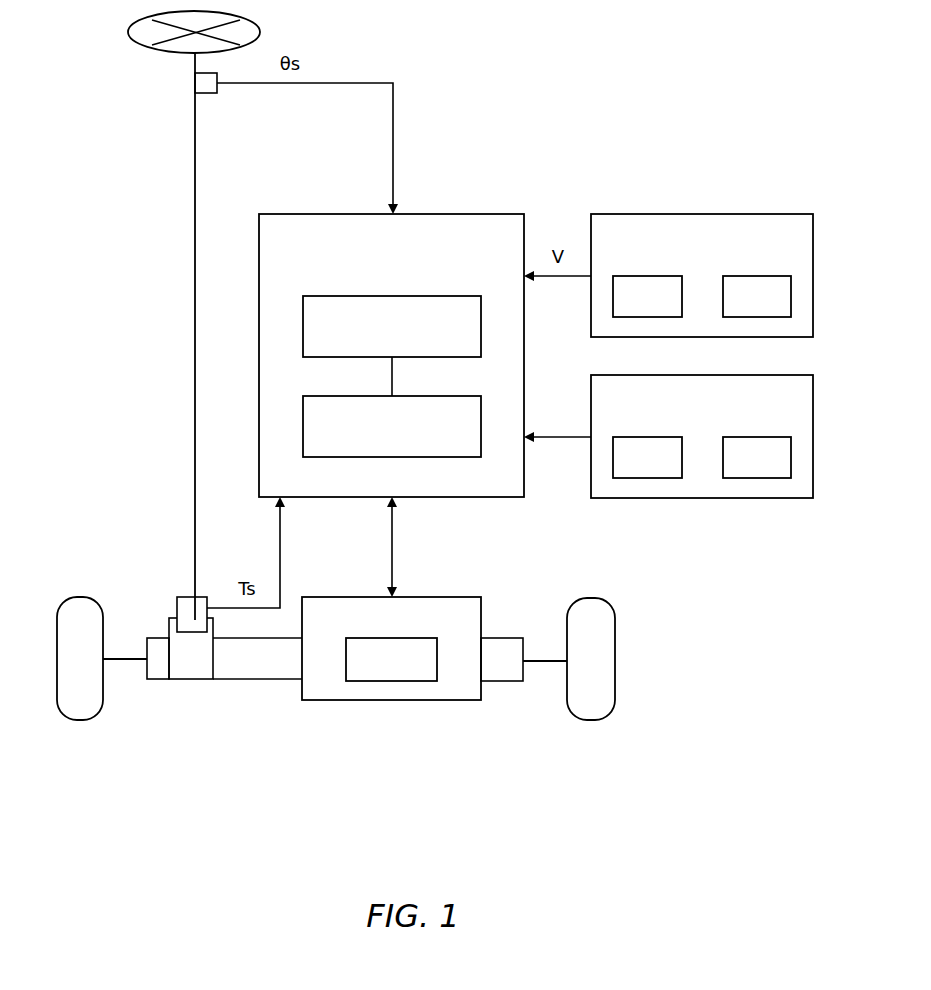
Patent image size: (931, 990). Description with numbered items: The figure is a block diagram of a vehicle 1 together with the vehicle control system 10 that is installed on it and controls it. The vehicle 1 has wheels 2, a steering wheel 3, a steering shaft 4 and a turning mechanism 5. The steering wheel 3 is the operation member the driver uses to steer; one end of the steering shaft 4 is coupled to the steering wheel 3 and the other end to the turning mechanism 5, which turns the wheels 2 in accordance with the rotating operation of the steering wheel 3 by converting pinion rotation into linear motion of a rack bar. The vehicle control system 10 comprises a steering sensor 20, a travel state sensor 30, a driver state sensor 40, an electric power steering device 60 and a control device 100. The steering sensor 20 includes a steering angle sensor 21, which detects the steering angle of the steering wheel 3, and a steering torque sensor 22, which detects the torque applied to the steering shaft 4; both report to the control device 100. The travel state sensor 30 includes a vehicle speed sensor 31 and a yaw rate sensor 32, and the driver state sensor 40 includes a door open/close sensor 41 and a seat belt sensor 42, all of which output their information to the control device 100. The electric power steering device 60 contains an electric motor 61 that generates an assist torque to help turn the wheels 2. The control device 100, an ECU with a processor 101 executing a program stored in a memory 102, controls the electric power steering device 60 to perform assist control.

The vehicle 1 is at (185, 812).
The wheels 2 is at (83, 710).
The steering wheel 3 is at (128, 28).
The steering shaft 4 is at (195, 170).
The turning mechanism 5 is at (194, 668).
The vehicle control system 10 is at (675, 596).
The steering sensor 20 is at (128, 118).
The steering angle sensor 21 is at (195, 82).
The steering torque sensor 22 is at (187, 597).
The travel state sensor 30 is at (632, 214).
The vehicle speed sensor 31 is at (647, 296).
The yaw rate sensor 32 is at (757, 296).
The driver state sensor 40 is at (632, 375).
The door open/close sensor 41 is at (647, 457).
The seat belt sensor 42 is at (757, 457).
The electric power steering device 60 is at (398, 700).
The electric motor 61 is at (391, 659).
The control device 100 is at (300, 214).
The processor 101 is at (348, 296).
The memory 102 is at (348, 396).